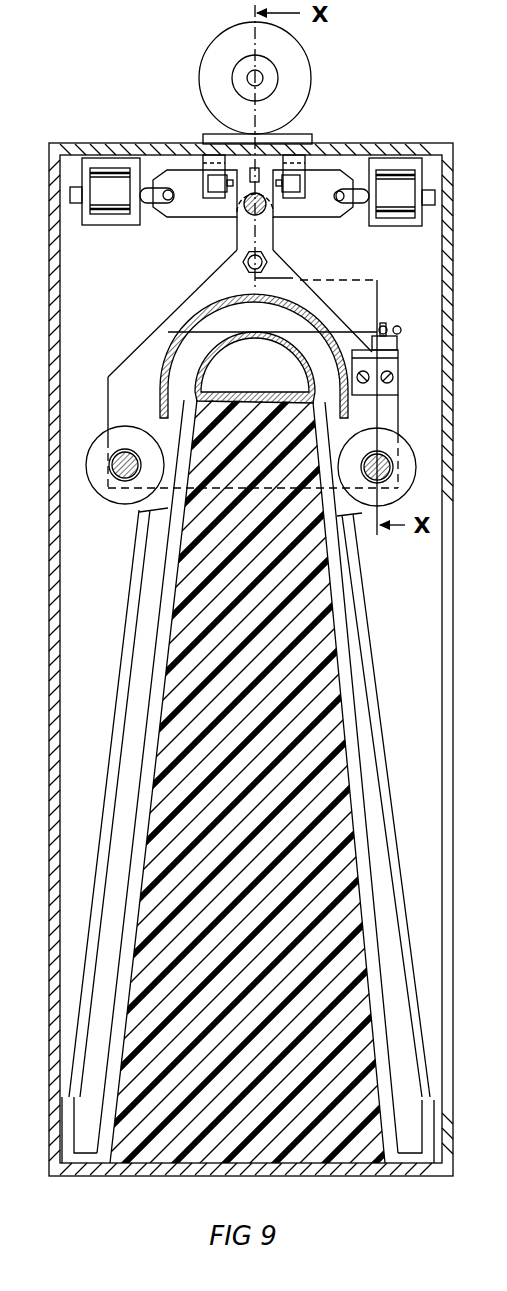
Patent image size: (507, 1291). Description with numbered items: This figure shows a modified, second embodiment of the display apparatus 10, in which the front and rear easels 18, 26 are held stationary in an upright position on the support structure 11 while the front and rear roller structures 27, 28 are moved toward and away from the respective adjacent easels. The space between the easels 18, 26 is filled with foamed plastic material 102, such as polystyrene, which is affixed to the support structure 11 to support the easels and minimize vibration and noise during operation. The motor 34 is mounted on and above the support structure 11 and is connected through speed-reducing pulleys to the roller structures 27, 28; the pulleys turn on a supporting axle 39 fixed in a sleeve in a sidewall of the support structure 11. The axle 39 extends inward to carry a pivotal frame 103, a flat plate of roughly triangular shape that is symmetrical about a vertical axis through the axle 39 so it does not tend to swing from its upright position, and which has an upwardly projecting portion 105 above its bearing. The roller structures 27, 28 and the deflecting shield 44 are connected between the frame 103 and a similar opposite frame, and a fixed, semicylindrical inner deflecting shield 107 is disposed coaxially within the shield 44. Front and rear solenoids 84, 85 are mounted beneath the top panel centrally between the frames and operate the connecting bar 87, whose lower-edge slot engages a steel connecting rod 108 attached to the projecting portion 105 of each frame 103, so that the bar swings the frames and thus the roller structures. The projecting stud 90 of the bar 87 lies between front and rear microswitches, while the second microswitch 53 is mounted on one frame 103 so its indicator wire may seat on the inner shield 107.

The display apparatus 10 is at (65, 113).
The support structure 11 is at (457, 1138).
The front easel 18 is at (385, 640).
The rear easel 26 is at (115, 665).
The front roller structure 27 is at (410, 427).
The rear roller structure 28 is at (112, 505).
The motor 34 is at (304, 53).
The supporting axle 39 is at (243, 263).
The deflecting shield 44 is at (165, 366).
The second microswitch 53 is at (393, 334).
The front solenoid 84 is at (405, 228).
The rear solenoid 85 is at (110, 226).
The connecting bar 87 is at (185, 168).
The projecting stud 90 is at (262, 183).
The foamed plastic material 102 is at (232, 709).
The pivotal frame 103 is at (108, 372).
The upwardly projecting portion 105 is at (236, 230).
The inner deflecting shield 107 is at (197, 377).
The connecting rod 108 is at (266, 206).